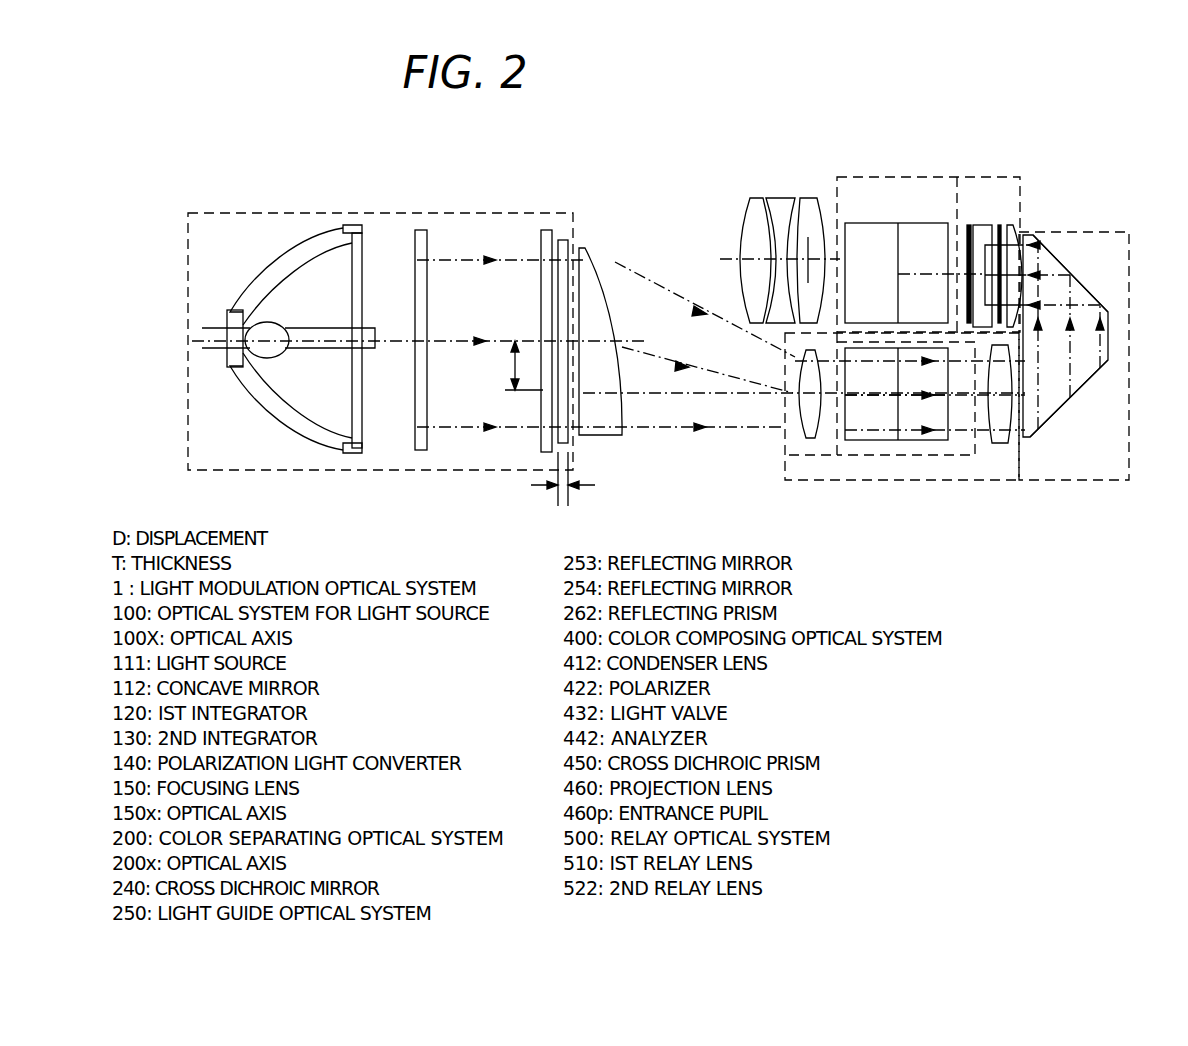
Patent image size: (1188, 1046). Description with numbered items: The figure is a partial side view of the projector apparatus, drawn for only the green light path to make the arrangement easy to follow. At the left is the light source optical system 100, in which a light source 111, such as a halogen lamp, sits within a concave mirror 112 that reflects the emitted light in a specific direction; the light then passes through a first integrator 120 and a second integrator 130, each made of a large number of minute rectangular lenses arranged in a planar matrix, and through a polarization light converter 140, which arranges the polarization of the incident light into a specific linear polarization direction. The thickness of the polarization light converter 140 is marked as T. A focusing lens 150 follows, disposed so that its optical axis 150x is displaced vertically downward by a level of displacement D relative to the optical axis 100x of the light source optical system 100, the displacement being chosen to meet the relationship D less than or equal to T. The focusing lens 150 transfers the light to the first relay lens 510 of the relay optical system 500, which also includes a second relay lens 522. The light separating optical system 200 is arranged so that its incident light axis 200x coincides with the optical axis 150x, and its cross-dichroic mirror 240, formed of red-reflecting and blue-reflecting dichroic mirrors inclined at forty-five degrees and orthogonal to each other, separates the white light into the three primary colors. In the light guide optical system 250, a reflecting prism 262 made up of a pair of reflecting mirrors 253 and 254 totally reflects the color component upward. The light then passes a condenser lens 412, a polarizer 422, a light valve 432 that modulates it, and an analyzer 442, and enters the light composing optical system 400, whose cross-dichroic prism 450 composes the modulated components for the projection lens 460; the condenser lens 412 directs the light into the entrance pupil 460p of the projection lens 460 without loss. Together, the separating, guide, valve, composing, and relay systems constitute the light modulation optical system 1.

The level of displacement D is at (524, 365).
The thickness of the polarization light converter T is at (563, 492).
The light modulation optical system 1 is at (787, 364).
The light source optical system 100 is at (216, 212).
The optical axis of the light source optical system 100x is at (457, 342).
The light source 111 is at (290, 347).
The concave mirror 112 is at (283, 268).
The first integrator 120 is at (421, 232).
The second integrator 130 is at (546, 240).
The polarization light converter 140 is at (562, 240).
The focusing lens 150 is at (597, 298).
The optical axis of the focusing lens 150x is at (523, 392).
The light separating optical system 200 is at (947, 478).
The incident light axis of the light separating optical system 200x is at (840, 395).
The cross-dichroic mirror 240 is at (885, 442).
The light guide optical system 250 is at (1090, 232).
The reflecting mirror 253 is at (1087, 383).
The reflecting mirror 254 is at (1068, 267).
The reflecting prism 262 is at (1057, 413).
The light composing optical system 400 is at (856, 176).
The condenser lens 412 is at (1013, 226).
The polarizer 422 is at (1000, 224).
The light valve 432 is at (982, 225).
The analyzer 442 is at (966, 226).
The cross-dichroic prism 450 is at (878, 235).
The projection lens 460 is at (777, 207).
The entrance pupil 460p is at (810, 243).
The relay optical system 500 is at (783, 443).
The first relay lens 510 is at (808, 437).
The second relay lens 522 is at (998, 440).